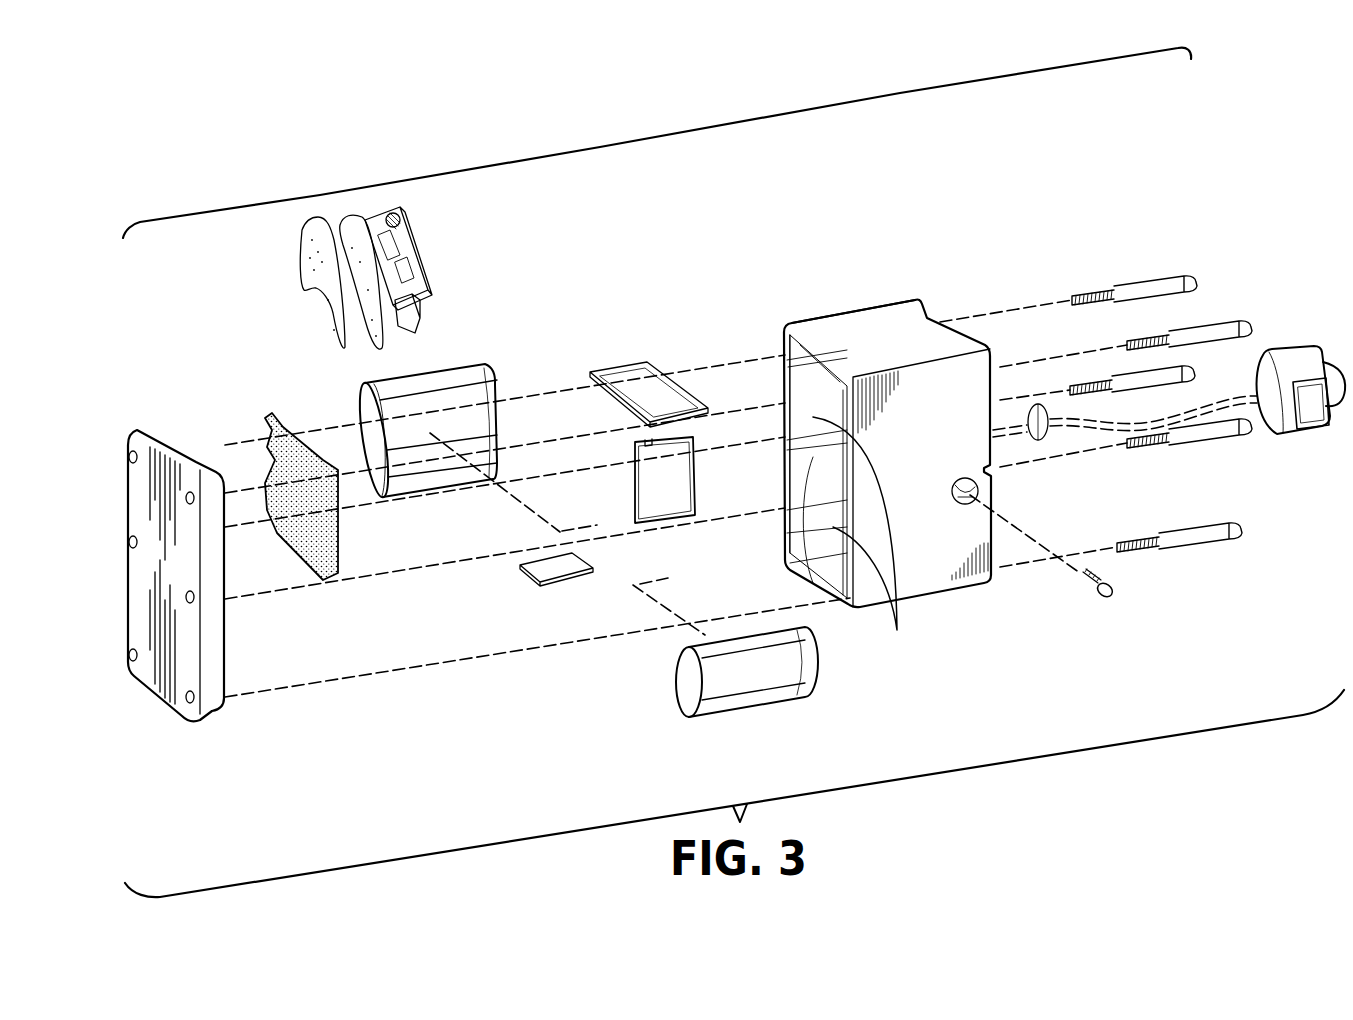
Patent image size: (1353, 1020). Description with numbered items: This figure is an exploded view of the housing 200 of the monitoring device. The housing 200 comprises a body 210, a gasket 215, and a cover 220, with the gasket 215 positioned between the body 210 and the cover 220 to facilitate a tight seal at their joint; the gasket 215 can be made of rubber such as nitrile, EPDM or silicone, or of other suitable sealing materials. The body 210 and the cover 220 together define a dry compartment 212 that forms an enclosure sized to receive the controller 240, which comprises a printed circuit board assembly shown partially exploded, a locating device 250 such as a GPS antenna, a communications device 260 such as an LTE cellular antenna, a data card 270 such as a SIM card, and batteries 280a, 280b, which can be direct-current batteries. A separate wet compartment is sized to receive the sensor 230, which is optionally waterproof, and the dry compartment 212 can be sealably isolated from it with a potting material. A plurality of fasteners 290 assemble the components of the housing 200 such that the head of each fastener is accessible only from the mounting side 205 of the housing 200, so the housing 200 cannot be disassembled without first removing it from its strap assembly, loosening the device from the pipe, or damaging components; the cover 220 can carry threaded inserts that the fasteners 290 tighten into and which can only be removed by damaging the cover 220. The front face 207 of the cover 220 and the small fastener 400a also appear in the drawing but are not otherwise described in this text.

The housing 200 is at (681, 133).
The mounting side 205 is at (928, 318).
The cover plate front face 207 is at (137, 505).
The body 210 is at (903, 451).
The dry compartment 212 is at (869, 540).
The gasket 215 is at (305, 560).
The cover 220 is at (157, 576).
The sensor 230 is at (1292, 362).
The controller 240 is at (310, 270).
The locating device 250 is at (633, 383).
The communications device 260 is at (680, 477).
The data card 270 is at (563, 571).
The battery 280a is at (765, 687).
The battery 280b is at (453, 380).
The fasteners 290 is at (1146, 286).
The fastener 400a is at (1112, 596).